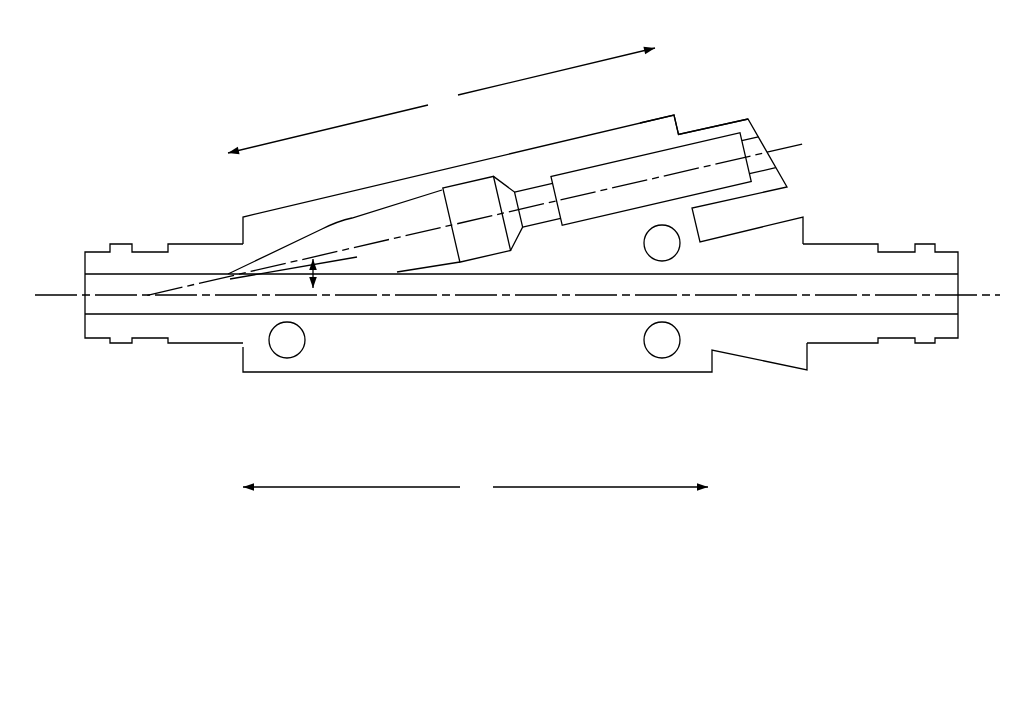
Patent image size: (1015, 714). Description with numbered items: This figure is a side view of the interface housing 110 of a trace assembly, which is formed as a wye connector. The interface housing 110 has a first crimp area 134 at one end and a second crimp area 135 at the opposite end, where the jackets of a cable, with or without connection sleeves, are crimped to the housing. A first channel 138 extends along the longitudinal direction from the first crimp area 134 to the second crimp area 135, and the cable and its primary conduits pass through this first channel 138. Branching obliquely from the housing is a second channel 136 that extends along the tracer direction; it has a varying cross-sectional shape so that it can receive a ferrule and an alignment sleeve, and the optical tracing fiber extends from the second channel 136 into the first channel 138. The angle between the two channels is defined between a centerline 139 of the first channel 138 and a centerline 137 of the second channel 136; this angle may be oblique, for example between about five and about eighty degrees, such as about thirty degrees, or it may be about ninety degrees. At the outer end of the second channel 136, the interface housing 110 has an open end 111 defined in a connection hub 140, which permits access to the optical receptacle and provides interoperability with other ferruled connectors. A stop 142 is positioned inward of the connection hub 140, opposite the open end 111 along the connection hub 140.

The interface housing 110 is at (262, 88).
The open end 111 is at (812, 140).
The first crimp area 134 is at (198, 343).
The second crimp area 135 is at (898, 342).
The second channel 136 is at (655, 168).
The centerline of the second channel 137 is at (588, 192).
The first channel 138 is at (505, 300).
The centerline of the first channel 139 is at (818, 293).
The connection hub 140 is at (711, 126).
The stop 142 is at (681, 121).